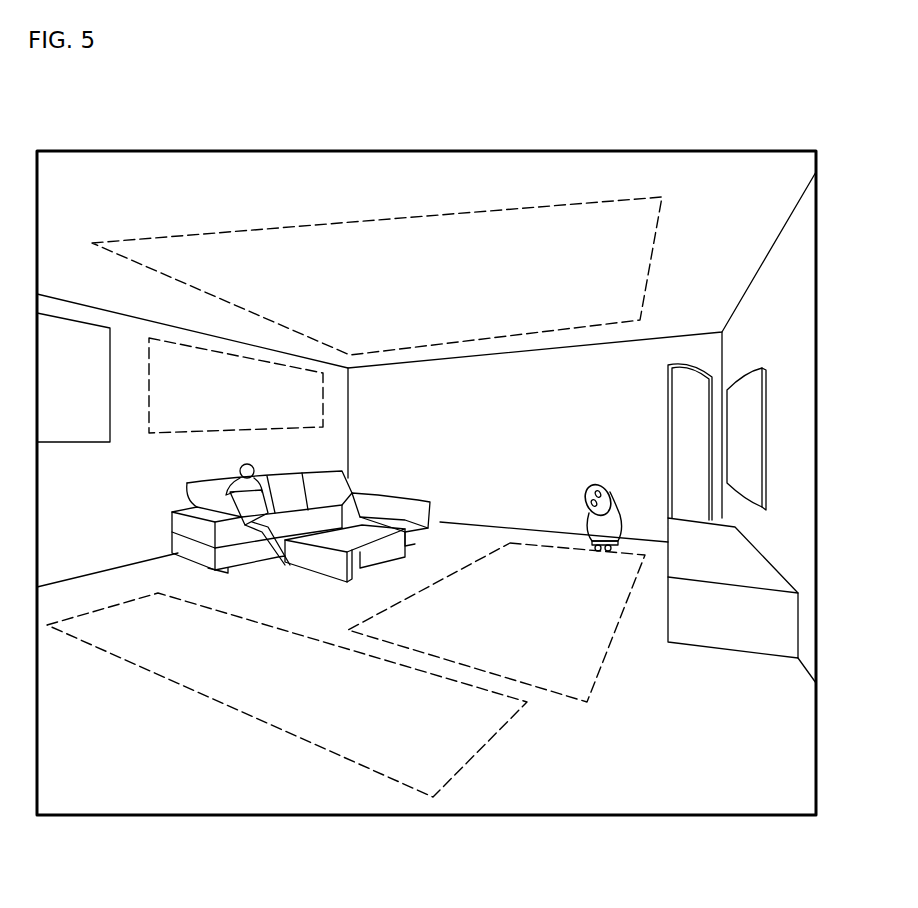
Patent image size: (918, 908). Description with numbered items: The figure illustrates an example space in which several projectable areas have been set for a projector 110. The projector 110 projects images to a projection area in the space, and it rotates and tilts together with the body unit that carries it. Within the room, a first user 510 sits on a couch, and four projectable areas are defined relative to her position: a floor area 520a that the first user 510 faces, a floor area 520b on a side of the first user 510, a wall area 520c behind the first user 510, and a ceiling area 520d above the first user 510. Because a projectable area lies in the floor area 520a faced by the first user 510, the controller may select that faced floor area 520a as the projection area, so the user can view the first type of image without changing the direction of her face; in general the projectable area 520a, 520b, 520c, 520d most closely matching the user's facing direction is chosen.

The projector 110 is at (609, 488).
The first user 510 is at (193, 545).
The floor area 520a is at (620, 613).
The floor area 520b is at (240, 710).
The wall area 520c is at (237, 357).
The ceiling area 520d is at (380, 220).